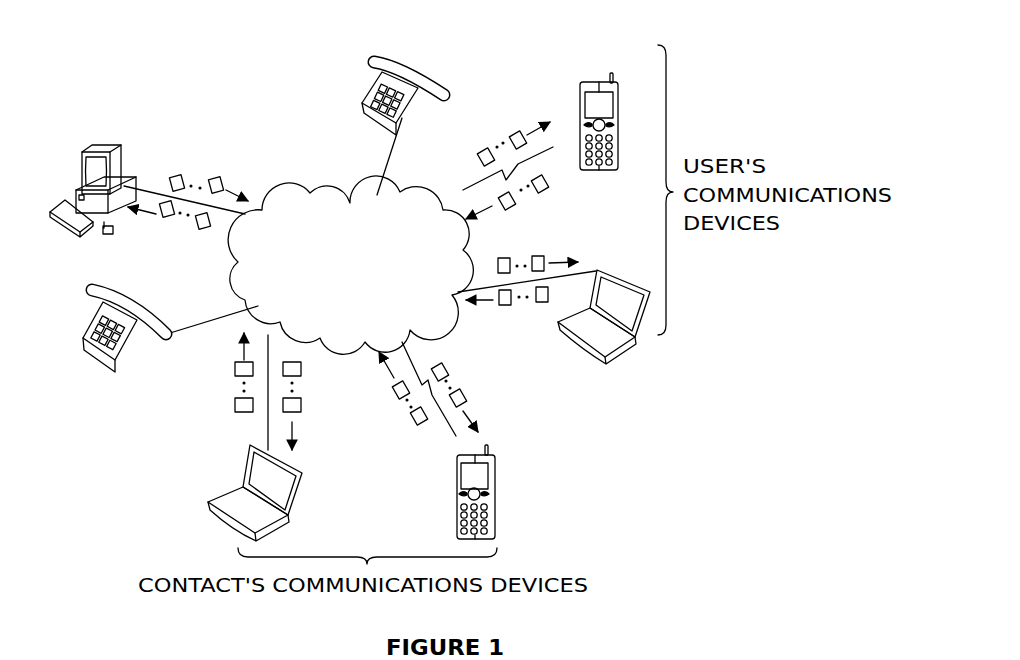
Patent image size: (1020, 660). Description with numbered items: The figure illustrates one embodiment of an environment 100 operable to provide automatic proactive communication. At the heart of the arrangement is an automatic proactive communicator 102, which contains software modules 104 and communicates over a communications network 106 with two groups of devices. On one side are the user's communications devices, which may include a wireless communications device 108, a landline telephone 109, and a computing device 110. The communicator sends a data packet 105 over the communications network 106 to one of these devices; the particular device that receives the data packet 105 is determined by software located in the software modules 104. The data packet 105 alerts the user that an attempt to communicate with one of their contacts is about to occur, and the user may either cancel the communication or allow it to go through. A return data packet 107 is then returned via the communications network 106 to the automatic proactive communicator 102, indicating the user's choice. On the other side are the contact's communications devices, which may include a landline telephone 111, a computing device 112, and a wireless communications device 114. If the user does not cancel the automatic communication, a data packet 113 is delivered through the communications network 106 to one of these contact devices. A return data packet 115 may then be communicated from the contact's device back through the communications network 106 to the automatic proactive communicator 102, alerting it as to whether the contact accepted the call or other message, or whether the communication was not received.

The environment 100 is at (232, 66).
The automatic proactive communicator 102 is at (124, 158).
The software modules 104 is at (70, 196).
The data packet 105 is at (218, 182).
The communications network 106 is at (300, 190).
The return data packet 107 is at (193, 240).
The wireless communications device 108 is at (584, 82).
The landline telephone 109 is at (402, 46).
The computing device 110 is at (585, 357).
The landline telephone 111 is at (82, 360).
The computing device 112 is at (208, 510).
The data packet 113 is at (300, 400).
The wireless communications device 114 is at (455, 505).
The return data packet 115 is at (230, 410).